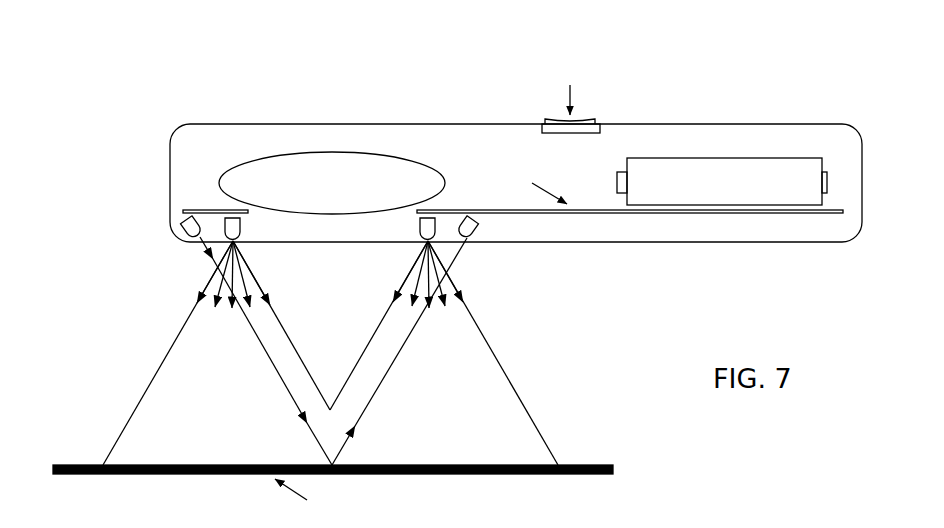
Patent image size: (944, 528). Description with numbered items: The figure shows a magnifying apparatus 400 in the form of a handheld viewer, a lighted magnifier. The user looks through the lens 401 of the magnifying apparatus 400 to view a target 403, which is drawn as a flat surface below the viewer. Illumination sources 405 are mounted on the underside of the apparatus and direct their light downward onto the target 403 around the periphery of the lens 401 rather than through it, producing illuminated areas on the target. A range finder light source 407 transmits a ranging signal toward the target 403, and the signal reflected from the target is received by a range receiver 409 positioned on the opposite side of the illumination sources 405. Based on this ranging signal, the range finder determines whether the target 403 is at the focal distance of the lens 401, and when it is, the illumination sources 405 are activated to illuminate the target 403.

The magnifying apparatus 400 is at (743, 93).
The lens 401 is at (366, 209).
The target 403 is at (340, 463).
The illumination sources 405 is at (412, 234).
The range finder light source 407 is at (188, 236).
The range receiver 409 is at (473, 236).